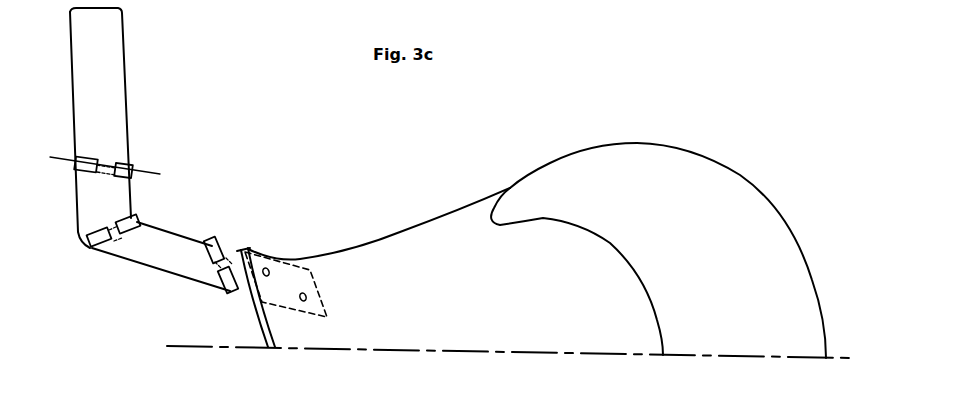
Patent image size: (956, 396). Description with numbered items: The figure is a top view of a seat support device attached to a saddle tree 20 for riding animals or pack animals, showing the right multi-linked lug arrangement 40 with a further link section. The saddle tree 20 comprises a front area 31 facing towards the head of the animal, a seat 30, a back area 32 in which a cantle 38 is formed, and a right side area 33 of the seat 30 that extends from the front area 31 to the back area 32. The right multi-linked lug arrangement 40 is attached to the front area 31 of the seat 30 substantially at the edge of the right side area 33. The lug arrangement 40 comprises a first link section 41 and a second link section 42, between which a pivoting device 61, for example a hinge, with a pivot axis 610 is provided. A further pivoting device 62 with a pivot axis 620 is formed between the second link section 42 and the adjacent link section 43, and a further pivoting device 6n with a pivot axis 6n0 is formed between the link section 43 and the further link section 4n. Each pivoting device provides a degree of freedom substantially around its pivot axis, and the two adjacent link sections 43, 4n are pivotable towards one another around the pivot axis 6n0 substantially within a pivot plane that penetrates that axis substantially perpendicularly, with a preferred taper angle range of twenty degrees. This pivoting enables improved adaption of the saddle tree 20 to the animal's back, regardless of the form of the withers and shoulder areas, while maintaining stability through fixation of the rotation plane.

The saddle tree 20 is at (553, 63).
The seat 30 is at (432, 307).
The front area 31 is at (320, 334).
The back area 32 is at (567, 307).
The right side area 33 is at (430, 226).
The cantle 38 is at (718, 262).
The right multi-linked lug arrangement 40 is at (274, 176).
The first link section 41 is at (247, 288).
The second link section 42 is at (145, 266).
The link section 43 is at (44, 220).
The further link section 4n is at (85, 78).
The further pivoting device 6n is at (100, 160).
The pivot axis 6n0 is at (132, 168).
The pivoting device 61 is at (241, 249).
The pivot axis 610 is at (212, 236).
The pivoting device 62 is at (110, 225).
The pivot axis 620 is at (85, 254).